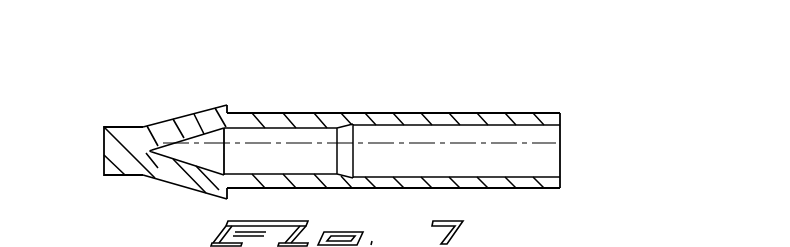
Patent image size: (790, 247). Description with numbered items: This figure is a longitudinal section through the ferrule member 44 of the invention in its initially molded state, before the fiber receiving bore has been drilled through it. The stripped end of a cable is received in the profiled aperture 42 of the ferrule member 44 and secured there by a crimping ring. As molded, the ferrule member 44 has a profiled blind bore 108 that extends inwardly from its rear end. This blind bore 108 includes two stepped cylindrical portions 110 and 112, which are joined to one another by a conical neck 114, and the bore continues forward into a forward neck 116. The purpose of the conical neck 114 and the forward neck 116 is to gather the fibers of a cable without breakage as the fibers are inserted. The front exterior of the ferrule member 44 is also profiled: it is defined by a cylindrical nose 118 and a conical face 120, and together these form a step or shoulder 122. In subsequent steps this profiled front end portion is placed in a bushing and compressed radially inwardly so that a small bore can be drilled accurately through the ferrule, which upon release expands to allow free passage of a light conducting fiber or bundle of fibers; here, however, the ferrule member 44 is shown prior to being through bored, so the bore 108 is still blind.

The profiled aperture 42 is at (557, 162).
The ferrule member 44 is at (462, 113).
The profiled blind bore 108 is at (499, 169).
The stepped cylindrical portion 110 is at (427, 115).
The stepped cylindrical portion 112 is at (302, 113).
The conical neck 114 is at (343, 115).
The forward neck 116 is at (202, 137).
The cylindrical nose 118 is at (110, 126).
The conical face 120 is at (178, 119).
The step or shoulder 122 is at (228, 105).